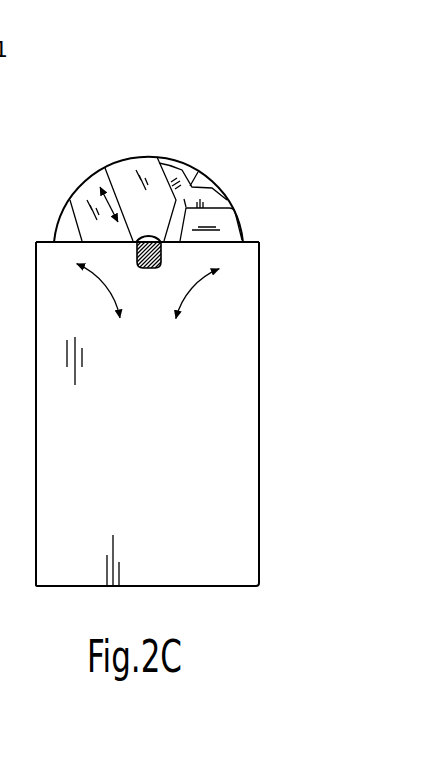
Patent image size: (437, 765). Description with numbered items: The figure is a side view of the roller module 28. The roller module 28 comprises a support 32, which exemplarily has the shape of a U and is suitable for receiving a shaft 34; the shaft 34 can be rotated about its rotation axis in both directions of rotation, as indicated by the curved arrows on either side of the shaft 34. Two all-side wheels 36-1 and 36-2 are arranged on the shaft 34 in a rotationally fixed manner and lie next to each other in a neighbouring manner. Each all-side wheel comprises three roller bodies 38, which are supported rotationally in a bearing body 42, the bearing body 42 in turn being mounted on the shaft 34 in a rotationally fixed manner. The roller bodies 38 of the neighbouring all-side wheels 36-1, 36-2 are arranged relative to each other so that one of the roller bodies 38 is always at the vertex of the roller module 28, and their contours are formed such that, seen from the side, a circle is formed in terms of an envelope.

The roller module 28 is at (241, 146).
The support 32 is at (260, 463).
The shaft 34 is at (143, 272).
The all-side wheel 36-1 is at (122, 154).
The all-side wheel 36-2 is at (194, 155).
The roller body 38 is at (243, 227).
The bearing body 42 is at (229, 197).